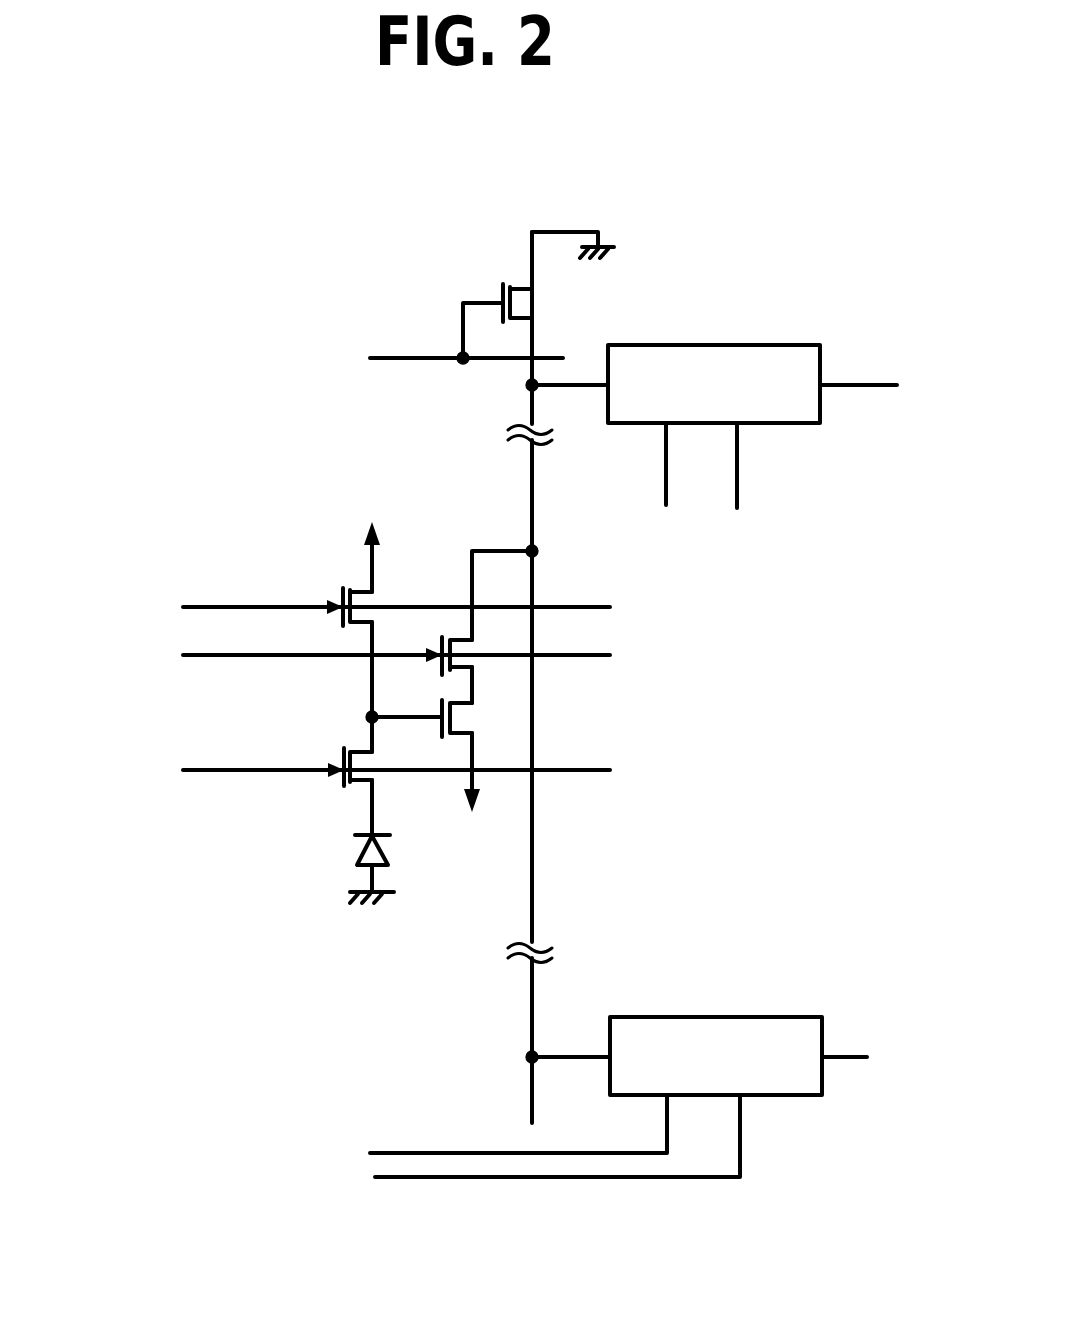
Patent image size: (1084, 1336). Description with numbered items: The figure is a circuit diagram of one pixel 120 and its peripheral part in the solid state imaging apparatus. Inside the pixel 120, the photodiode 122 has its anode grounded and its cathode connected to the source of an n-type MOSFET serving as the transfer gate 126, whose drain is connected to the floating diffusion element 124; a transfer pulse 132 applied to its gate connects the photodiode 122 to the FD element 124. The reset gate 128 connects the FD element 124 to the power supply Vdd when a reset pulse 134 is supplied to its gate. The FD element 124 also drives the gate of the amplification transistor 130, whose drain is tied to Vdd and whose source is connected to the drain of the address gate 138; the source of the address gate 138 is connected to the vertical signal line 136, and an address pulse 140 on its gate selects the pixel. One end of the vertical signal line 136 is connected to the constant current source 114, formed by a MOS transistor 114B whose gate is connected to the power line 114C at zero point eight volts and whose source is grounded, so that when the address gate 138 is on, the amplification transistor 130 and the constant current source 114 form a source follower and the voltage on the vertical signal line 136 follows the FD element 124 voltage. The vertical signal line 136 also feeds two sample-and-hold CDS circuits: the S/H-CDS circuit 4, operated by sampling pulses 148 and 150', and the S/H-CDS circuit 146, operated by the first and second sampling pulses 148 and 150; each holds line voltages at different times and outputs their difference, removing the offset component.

The pixel 120 is at (172, 375).
The constant current source 114 is at (504, 290).
The MOS transistor 114B is at (437, 269).
The power line 114C is at (400, 358).
The S/H-CDS circuit 4 is at (730, 345).
The first sampling pulse 148 is at (666, 482).
The sampling pulse 150' is at (794, 465).
The S/H-CDS circuit 146 is at (765, 1017).
The second sampling pulse 150 is at (557, 1181).
The reset gate 128 is at (338, 593).
The reset pulse 134 is at (198, 605).
The address pulse 140 is at (193, 657).
The address gate 138 is at (460, 646).
The amplification transistor 130 is at (460, 718).
The floating diffusion (FD) element 124 is at (370, 717).
The transfer gate 126 is at (335, 752).
The transfer pulse 132 is at (205, 770).
The photodiode 122 is at (355, 858).
The vertical signal line 136 is at (540, 840).